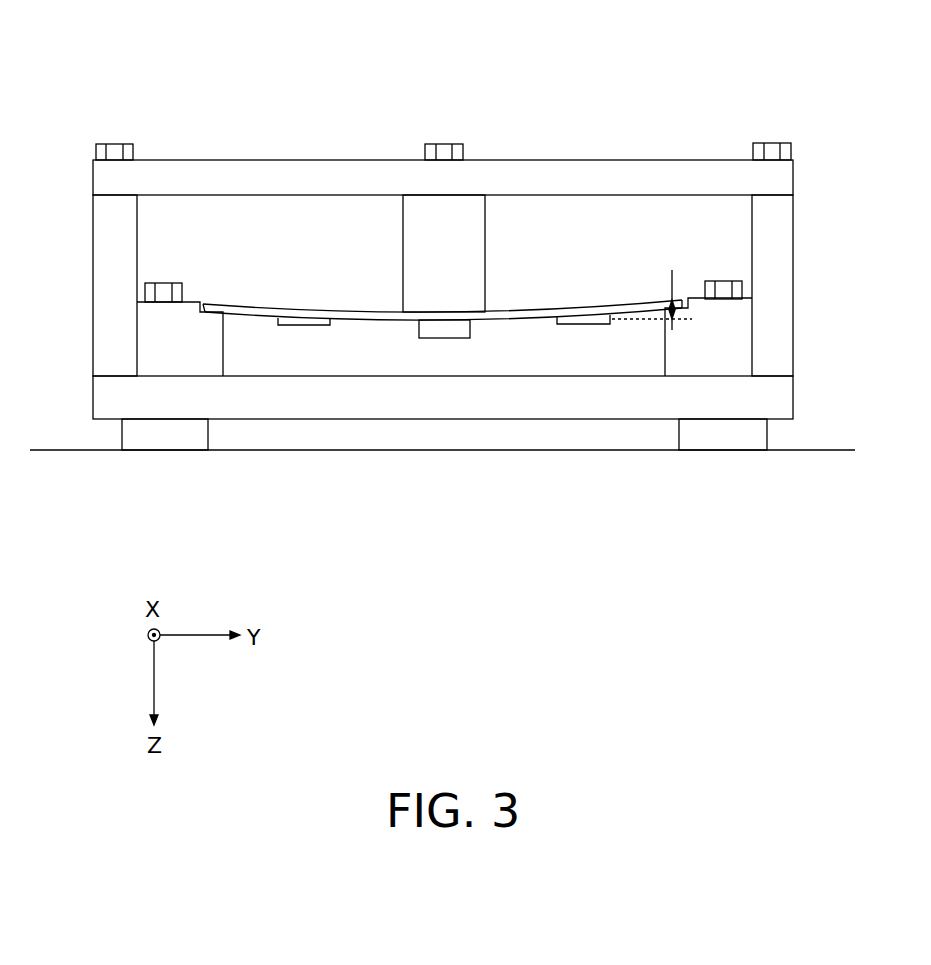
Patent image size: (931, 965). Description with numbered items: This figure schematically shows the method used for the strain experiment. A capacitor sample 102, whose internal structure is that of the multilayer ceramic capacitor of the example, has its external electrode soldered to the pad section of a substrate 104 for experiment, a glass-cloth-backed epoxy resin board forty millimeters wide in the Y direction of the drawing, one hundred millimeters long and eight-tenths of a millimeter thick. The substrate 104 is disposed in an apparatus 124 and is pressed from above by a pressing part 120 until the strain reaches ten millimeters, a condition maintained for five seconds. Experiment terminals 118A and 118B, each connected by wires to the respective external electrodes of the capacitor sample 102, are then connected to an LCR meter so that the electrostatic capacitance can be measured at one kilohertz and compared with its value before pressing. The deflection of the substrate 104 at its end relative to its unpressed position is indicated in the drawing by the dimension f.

The apparatus 124 is at (228, 129).
The substrate for experiment 104 is at (300, 291).
The pressing part 120 is at (485, 241).
The capacitor sample 102 is at (437, 338).
The experiment terminal 118A is at (298, 326).
The experiment terminal 118B is at (571, 325).
The lift amount f is at (655, 335).